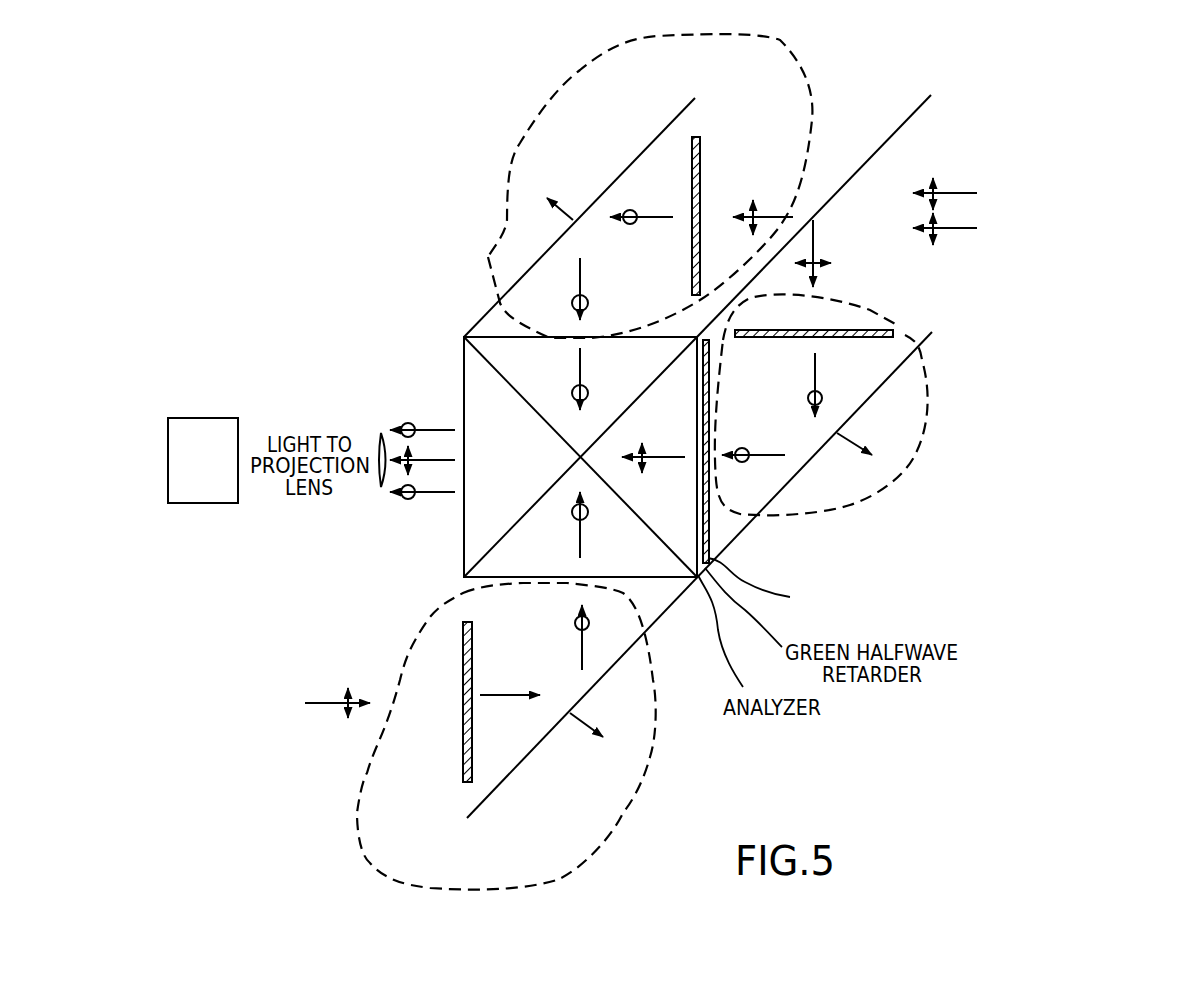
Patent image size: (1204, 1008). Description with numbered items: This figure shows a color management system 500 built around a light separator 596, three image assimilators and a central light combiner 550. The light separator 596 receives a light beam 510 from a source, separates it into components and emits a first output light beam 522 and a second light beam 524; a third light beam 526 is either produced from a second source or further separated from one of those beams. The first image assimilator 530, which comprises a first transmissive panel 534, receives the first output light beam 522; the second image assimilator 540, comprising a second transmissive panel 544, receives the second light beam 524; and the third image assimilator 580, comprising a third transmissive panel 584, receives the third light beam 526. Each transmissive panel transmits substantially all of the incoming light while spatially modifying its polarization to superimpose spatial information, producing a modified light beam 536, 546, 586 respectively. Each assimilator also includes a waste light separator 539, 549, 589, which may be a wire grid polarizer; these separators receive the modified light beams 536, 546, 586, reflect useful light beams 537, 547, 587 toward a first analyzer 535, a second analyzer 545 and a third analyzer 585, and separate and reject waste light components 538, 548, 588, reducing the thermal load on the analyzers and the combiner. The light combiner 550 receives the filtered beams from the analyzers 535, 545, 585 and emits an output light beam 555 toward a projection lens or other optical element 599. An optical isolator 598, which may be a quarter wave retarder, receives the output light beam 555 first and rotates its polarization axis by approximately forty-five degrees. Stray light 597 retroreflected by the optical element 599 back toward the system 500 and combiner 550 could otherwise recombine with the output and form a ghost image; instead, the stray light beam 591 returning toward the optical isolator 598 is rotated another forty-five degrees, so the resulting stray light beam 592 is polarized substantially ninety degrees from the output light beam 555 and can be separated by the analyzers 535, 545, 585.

The color management system 500 is at (1092, 344).
The light beam 510 is at (1010, 203).
The first output light beam 522 is at (818, 248).
The second light beam 524 is at (818, 143).
The third light beam 526 is at (336, 694).
The first image assimilator 530 is at (928, 422).
The first transmissive panel 534 is at (912, 340).
The first analyzer 535 is at (709, 520).
The modified light beam 536 is at (815, 375).
The useful light beam 537 is at (762, 455).
The waste light component 538 is at (865, 436).
The waste light separator 539 is at (823, 450).
The second image assimilator 540 is at (545, 107).
The second transmissive panel 544 is at (700, 193).
The second analyzer 545 is at (492, 331).
The modified light beam 546 is at (650, 217).
The useful light beam 547 is at (581, 271).
The waste light component 548 is at (550, 193).
The waste light separator 549 is at (593, 200).
The light combiner 550 is at (483, 410).
The output light beam 555 is at (407, 423).
The third image assimilator 580 is at (655, 780).
The third transmissive panel 584 is at (472, 660).
The third analyzer 585 is at (653, 577).
The modified light beam 586 is at (510, 681).
The useful light beam 587 is at (583, 652).
The waste light component 588 is at (599, 740).
The waste light separator 589 is at (590, 690).
The stray light beam 591 is at (240, 427).
The stray light beam 592 is at (387, 437).
The light separator 596 is at (930, 97).
The stray light 597 is at (238, 465).
The optical isolator 598 is at (382, 490).
The projection lens 599 is at (218, 418).